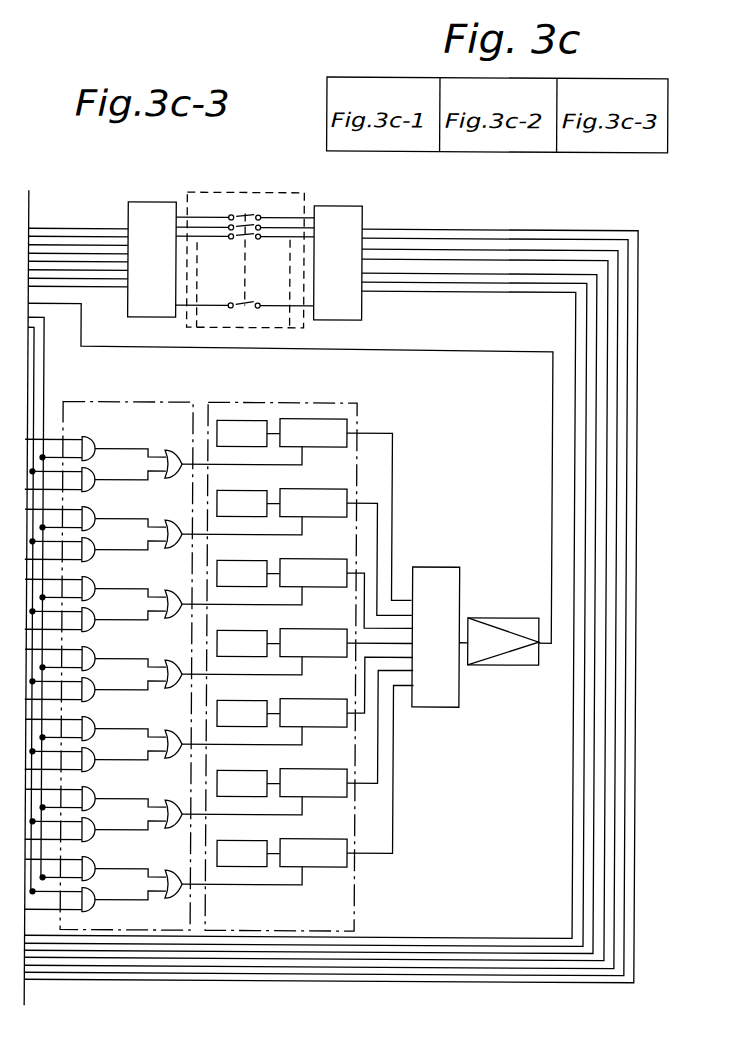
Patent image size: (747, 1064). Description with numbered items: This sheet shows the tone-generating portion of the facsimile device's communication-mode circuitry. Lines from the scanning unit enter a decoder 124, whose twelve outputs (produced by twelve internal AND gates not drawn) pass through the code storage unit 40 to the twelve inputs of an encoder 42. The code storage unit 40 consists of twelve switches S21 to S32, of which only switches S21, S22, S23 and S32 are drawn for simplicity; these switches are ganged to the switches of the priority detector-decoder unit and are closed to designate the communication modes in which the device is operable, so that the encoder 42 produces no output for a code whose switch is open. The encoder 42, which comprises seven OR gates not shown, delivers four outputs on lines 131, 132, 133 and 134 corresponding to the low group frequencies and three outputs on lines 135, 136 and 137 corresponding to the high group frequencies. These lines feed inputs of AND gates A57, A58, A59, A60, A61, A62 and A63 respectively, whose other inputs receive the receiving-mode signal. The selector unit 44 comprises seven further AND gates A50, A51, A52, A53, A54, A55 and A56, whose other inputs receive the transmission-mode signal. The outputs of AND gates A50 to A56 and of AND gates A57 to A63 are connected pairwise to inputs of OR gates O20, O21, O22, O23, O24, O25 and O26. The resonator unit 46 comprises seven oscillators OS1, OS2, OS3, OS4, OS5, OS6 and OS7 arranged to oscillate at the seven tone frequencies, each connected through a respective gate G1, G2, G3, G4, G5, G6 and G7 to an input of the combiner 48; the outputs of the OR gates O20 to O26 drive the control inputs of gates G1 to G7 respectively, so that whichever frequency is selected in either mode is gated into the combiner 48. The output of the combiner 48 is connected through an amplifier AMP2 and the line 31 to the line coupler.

The decoder 124 is at (160, 203).
The encoder 42 is at (344, 206).
The code storage unit 40 is at (302, 328).
The switch S21 is at (249, 212).
The switch S22 is at (238, 214).
The switch S23 is at (246, 240).
The switch S32 is at (243, 305).
The line 131 is at (442, 229).
The line 132 is at (468, 238).
The line 133 is at (498, 249).
The line 134 is at (524, 259).
The line 135 is at (510, 273).
The line 136 is at (464, 282).
The line 137 is at (426, 291).
The line 31 is at (551, 468).
The selector unit 44 is at (135, 403).
The resonator unit 46 is at (274, 403).
The AND gate A50 is at (86, 439).
The AND gate A51 is at (81, 506).
The AND gate A52 is at (81, 576).
The AND gate A53 is at (81, 646).
The AND gate A54 is at (81, 716).
The AND gate A55 is at (81, 786).
The AND gate A56 is at (81, 856).
The AND gate A57 is at (86, 482).
The AND gate A58 is at (81, 544).
The AND gate A59 is at (81, 614).
The AND gate A60 is at (81, 684).
The AND gate A61 is at (81, 754).
The AND gate A62 is at (81, 824).
The AND gate A63 is at (81, 894).
The OR gate O20 is at (170, 451).
The OR gate O21 is at (198, 517).
The OR gate O22 is at (198, 587).
The OR gate O23 is at (198, 657).
The OR gate O24 is at (198, 727).
The OR gate O25 is at (198, 797).
The OR gate O26 is at (198, 867).
The oscillator OS1 is at (231, 421).
The oscillator OS2 is at (248, 490).
The oscillator OS3 is at (248, 560).
The oscillator OS4 is at (248, 630).
The oscillator OS5 is at (248, 700).
The oscillator OS6 is at (248, 770).
The oscillator OS7 is at (248, 840).
The gate G1 is at (345, 447).
The gate G2 is at (345, 552).
The gate G3 is at (346, 594).
The gate G4 is at (346, 664).
The gate G5 is at (346, 713).
The gate G6 is at (346, 754).
The gate G7 is at (347, 797).
The combiner 48 is at (427, 567).
The amplifier AMP2 is at (505, 664).